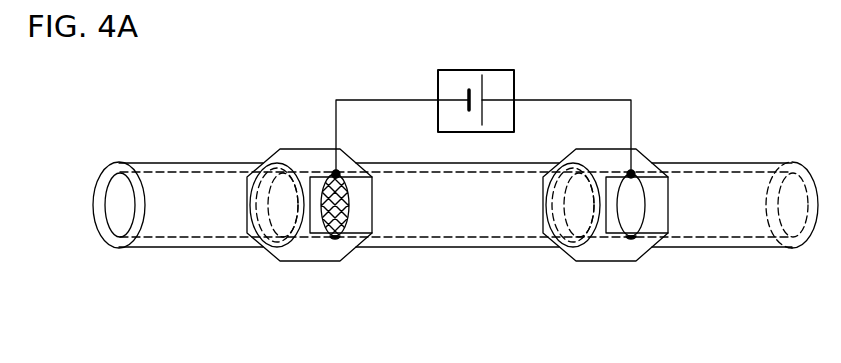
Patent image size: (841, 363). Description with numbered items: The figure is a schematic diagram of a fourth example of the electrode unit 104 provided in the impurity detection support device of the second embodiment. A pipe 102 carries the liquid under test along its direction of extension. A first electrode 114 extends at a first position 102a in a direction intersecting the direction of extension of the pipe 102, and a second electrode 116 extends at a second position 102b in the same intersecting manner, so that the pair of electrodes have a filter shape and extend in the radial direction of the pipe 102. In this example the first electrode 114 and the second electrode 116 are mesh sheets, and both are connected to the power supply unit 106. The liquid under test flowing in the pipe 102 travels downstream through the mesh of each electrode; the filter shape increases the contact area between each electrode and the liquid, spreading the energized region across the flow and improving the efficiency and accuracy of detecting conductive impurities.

The pipe 102 is at (769, 163).
The first position 102a is at (336, 267).
The second position 102b is at (631, 267).
The electrode unit 104 is at (504, 342).
The power supply unit 106 is at (503, 70).
The first electrode 114 is at (319, 177).
The second electrode 116 is at (647, 182).